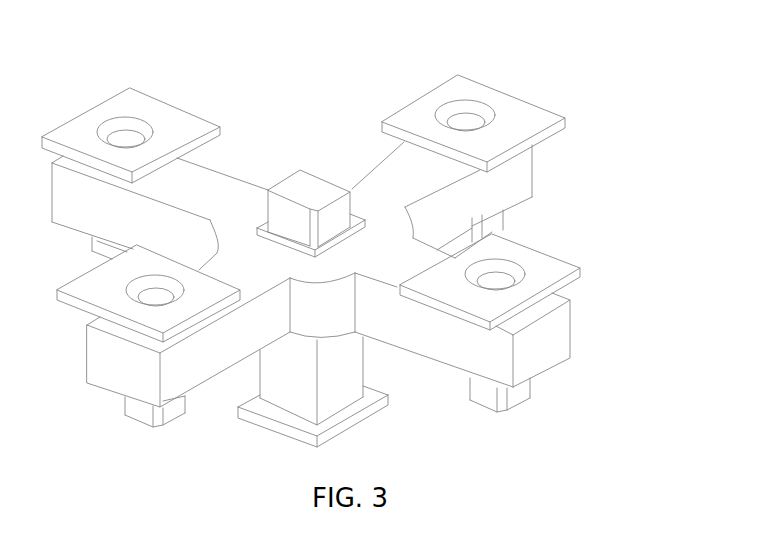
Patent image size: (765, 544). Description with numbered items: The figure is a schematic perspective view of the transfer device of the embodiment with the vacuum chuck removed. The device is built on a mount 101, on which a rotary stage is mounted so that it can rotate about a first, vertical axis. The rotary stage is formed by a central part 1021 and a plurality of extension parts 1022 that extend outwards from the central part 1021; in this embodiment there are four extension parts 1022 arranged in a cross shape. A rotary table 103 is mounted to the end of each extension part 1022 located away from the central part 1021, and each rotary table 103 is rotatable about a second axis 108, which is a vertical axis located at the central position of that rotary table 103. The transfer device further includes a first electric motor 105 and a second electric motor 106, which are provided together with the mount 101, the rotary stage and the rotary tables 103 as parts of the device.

The mount 101 is at (283, 388).
The rotary table 103 is at (512, 132).
The first electric motor 105 is at (302, 197).
The second electric motor 106 is at (490, 393).
The second axis 108 is at (127, 150).
The central part 1021 is at (382, 232).
The extension part 1022 is at (425, 177).